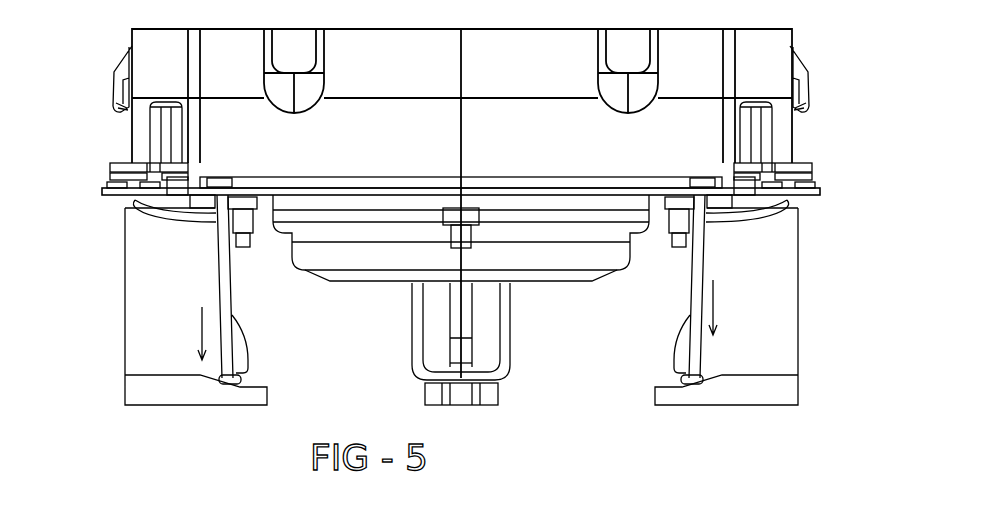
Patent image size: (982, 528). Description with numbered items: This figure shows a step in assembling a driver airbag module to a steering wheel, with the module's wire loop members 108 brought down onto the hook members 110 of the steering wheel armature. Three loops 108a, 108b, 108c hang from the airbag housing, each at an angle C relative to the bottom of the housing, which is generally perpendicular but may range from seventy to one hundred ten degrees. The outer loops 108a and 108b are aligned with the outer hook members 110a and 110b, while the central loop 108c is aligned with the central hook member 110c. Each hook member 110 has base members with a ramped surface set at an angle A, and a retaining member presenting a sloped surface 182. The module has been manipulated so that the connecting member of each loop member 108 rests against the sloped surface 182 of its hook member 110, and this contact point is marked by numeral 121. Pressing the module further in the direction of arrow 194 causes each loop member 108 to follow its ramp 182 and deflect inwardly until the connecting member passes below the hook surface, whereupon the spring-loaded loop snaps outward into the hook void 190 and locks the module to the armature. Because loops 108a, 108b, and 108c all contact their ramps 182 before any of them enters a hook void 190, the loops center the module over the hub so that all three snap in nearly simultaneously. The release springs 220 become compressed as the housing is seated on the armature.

The release springs 220 is at (157, 219).
The contact point 121 is at (217, 275).
The loop member 108 is at (175, 266).
The loop member 108a is at (222, 303).
The loop member 108b is at (697, 267).
The loop member 108c is at (505, 318).
The hook member 110 is at (151, 306).
The hook member 110a is at (153, 323).
The hook member 110b is at (777, 280).
The hook member 110c is at (460, 317).
The sloped surface 182 is at (238, 318).
The arrow 194 is at (200, 328).
The hook void 190 is at (243, 380).
The angle A is at (337, 210).
The angle C is at (590, 203).